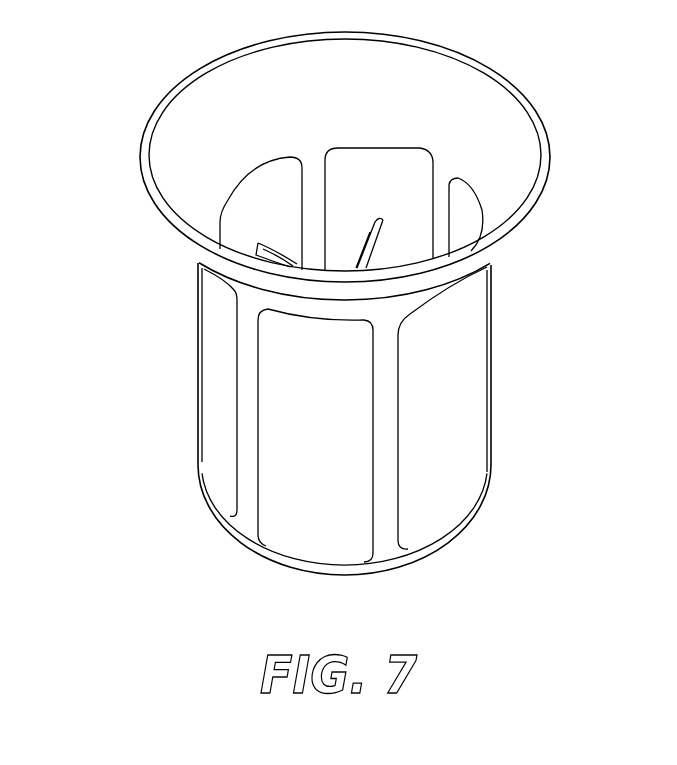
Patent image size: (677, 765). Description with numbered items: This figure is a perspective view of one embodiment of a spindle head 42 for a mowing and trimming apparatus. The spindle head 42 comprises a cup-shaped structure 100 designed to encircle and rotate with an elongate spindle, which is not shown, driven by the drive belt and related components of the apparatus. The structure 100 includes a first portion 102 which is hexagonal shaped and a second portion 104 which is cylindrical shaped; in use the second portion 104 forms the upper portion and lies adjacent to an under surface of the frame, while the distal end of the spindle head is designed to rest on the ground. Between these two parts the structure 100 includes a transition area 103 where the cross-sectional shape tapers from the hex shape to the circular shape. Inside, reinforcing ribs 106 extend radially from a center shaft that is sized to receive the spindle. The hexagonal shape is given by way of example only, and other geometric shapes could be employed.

The spindle head 42 is at (135, 92).
The cup-shaped structure 100 is at (188, 389).
The first portion 102 is at (507, 275).
The transition area 103 is at (520, 258).
The second portion 104 is at (558, 138).
The reinforcing ribs 106 is at (276, 262).